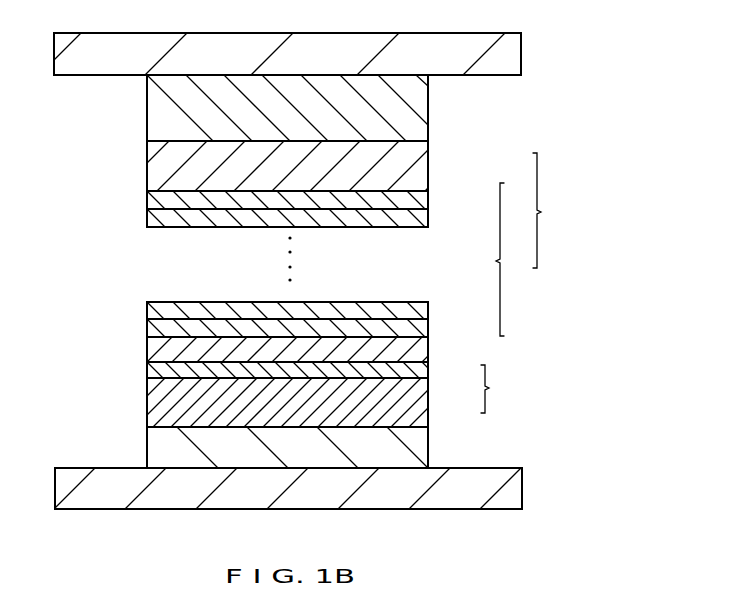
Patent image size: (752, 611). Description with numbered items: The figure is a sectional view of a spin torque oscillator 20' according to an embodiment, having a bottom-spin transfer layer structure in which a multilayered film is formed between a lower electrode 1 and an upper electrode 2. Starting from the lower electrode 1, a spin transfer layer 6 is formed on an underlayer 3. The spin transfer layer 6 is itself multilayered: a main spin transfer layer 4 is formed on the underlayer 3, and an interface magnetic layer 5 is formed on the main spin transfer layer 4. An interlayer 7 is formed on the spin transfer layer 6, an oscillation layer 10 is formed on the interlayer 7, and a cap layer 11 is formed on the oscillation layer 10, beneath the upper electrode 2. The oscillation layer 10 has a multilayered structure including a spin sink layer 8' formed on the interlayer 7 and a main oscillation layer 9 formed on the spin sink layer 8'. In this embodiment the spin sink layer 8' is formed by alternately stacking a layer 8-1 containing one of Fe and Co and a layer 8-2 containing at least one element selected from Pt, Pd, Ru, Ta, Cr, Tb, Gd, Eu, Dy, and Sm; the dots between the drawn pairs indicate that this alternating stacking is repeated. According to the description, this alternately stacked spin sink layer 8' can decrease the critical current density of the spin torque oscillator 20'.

The lower electrode 1 is at (515, 487).
The upper electrode 2 is at (508, 50).
The underlayer 3 is at (420, 445).
The main spin transfer layer 4 is at (418, 403).
The interface magnetic layer 5 is at (420, 372).
The spin transfer layer 6 is at (497, 389).
The interlayer 7 is at (418, 349).
The layer containing one of Fe and Co 8-1 is at (418, 219).
The layer containing at least one element selected from Pt, Pd, Ru, Ta, Cr, Tb, Gd, 8-2 is at (420, 196).
The spin sink layer 8' is at (513, 259).
The main oscillation layer 9 is at (418, 164).
The oscillation layer 10 is at (552, 210).
The cap layer 11 is at (415, 109).
The spin torque oscillator 20' is at (624, 95).